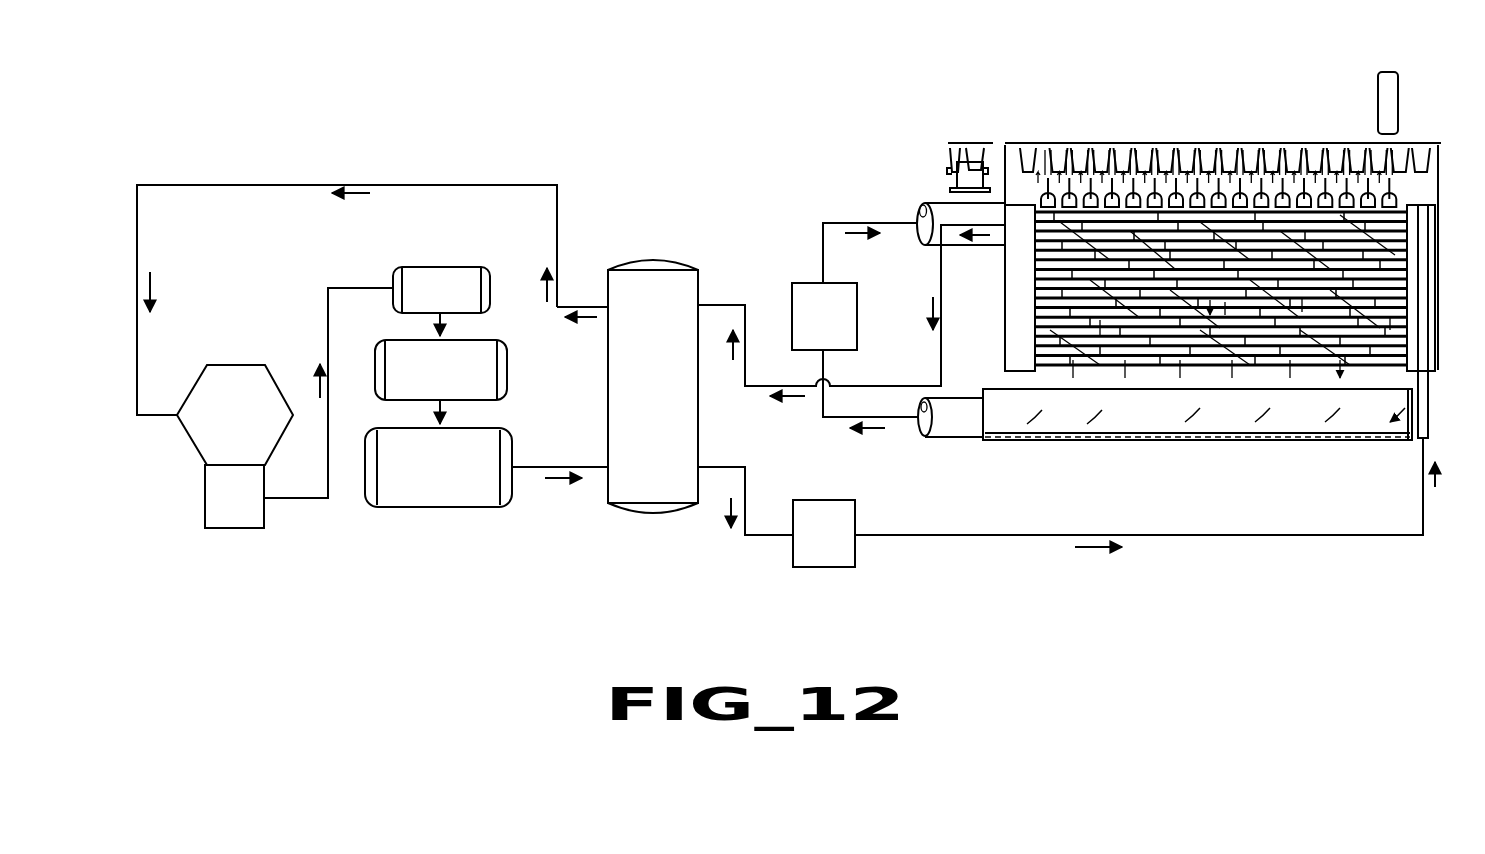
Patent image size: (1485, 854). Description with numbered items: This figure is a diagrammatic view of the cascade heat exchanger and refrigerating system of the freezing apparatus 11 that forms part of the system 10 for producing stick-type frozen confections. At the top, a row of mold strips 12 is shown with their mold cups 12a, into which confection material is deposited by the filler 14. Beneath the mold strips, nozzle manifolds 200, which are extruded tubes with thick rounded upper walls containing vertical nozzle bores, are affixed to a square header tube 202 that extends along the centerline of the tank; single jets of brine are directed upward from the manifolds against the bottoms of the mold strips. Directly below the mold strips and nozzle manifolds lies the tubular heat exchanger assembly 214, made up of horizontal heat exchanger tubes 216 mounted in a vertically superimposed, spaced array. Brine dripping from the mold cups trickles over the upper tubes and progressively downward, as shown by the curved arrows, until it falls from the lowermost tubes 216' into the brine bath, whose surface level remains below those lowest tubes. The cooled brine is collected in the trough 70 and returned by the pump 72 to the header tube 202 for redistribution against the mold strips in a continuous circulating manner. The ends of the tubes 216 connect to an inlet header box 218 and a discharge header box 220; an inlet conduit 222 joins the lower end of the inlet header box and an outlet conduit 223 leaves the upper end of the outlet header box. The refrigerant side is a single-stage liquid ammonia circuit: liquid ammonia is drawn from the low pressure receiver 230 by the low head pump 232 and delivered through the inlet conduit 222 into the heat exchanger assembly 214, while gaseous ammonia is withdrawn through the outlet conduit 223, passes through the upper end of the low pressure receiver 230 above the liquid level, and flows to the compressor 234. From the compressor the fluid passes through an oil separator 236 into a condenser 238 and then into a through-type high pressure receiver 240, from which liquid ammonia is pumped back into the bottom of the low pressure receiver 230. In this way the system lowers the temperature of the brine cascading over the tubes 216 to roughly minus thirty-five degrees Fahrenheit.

The system 10 is at (1196, 92).
The freezing apparatus 11 is at (1052, 447).
The mold strips 12 is at (1068, 145).
The mold cups 12a is at (1162, 146).
The filler 14 is at (1378, 93).
The trough 70 is at (1170, 435).
The pump 72 is at (808, 332).
The nozzle manifolds 200 is at (1362, 194).
The header tube 202 is at (1020, 203).
The tubular heat exchanger assembly 214 is at (1008, 288).
The heat exchanger tubes 216 is at (1178, 283).
The lowermost heat exchanger tubes 216' is at (1221, 377).
The inlet header box 218 is at (1410, 362).
The discharge header box 220 is at (1010, 340).
The inlet conduit 222 is at (870, 536).
The outlet conduit 223 is at (940, 265).
The low pressure receiver 230 is at (628, 387).
The low head pump 232 is at (802, 549).
The compressor 234 is at (212, 430).
The oil separator 236 is at (465, 305).
The condenser 238 is at (418, 386).
The high pressure receiver 240 is at (415, 478).